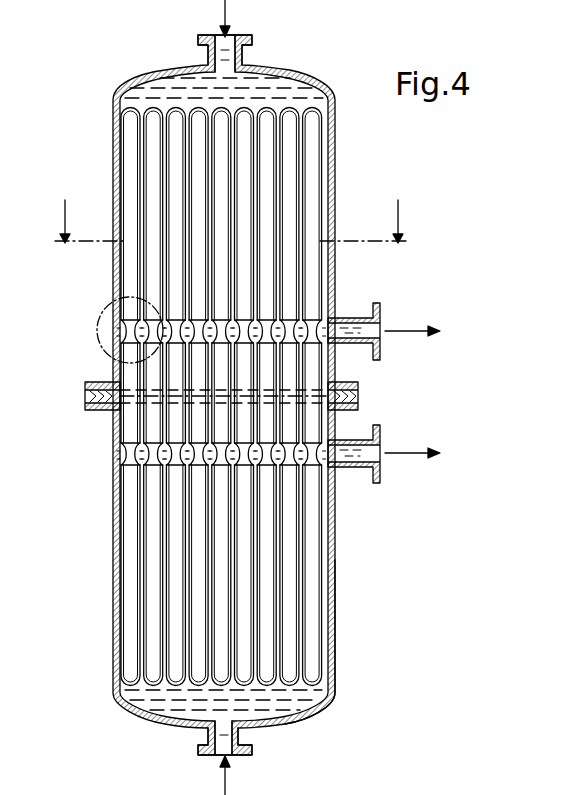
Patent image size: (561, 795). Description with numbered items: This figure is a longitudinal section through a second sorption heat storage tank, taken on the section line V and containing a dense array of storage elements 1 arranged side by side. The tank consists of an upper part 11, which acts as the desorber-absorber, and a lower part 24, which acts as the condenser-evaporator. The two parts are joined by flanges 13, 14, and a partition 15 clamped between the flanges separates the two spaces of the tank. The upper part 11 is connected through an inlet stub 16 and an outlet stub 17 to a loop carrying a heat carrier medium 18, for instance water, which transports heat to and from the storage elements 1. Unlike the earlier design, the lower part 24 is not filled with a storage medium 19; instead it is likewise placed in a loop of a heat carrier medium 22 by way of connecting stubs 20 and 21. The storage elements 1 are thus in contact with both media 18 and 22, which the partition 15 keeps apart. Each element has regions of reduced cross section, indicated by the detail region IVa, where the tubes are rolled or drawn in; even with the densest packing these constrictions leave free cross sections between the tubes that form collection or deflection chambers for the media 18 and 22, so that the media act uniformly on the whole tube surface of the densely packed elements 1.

The storage element 1 is at (308, 178).
The upper part of the tank 11 is at (336, 128).
The flange 13 is at (97, 383).
The flange 14 is at (358, 403).
The partition 15 is at (120, 400).
The inlet stub 16 is at (238, 40).
The outlet stub 17 is at (381, 349).
The heat carrier medium 18 is at (292, 80).
The storage medium 19 is at (257, 775).
The connecting stub 20 is at (345, 468).
The connecting stub 21 is at (198, 752).
The heat carrier medium 22 is at (282, 710).
The lower part of the tank 24 is at (336, 618).
The detail region IVa is at (100, 330).
The section line V is at (46, 253).